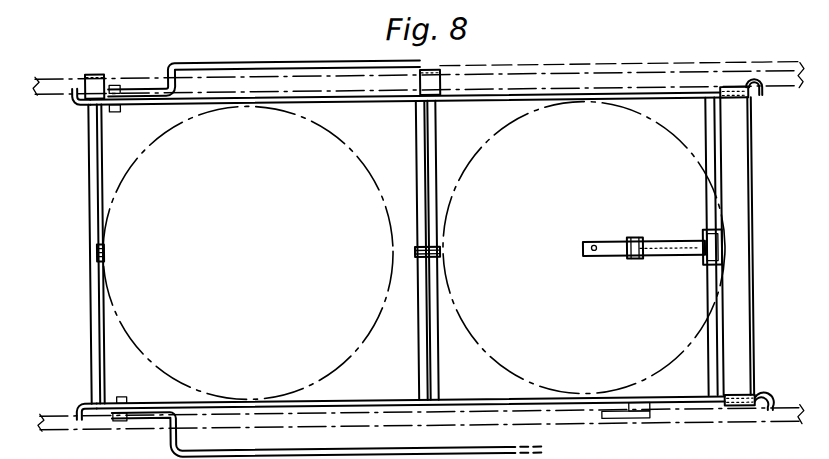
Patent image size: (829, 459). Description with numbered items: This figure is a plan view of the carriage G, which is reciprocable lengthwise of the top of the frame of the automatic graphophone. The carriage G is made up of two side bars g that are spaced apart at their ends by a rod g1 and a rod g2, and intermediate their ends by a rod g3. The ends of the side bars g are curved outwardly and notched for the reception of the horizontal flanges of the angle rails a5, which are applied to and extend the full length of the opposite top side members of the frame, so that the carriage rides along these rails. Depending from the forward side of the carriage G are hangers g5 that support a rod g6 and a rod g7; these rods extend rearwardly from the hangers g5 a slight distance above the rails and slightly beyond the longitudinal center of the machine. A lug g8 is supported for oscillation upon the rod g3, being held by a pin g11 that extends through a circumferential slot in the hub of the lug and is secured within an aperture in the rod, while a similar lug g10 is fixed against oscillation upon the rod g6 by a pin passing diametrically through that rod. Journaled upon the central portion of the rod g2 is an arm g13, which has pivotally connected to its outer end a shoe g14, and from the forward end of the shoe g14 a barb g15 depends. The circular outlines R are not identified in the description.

The carriage G is at (310, 96).
The side bars g is at (568, 99).
The rod g1 is at (92, 333).
The rod g2 is at (722, 337).
The rod g3 is at (420, 349).
The hangers g5 is at (107, 74).
The rod g6 is at (105, 135).
The rod g7 is at (437, 191).
The lug g8 is at (433, 258).
The lug g10 is at (104, 257).
The pins g11 is at (440, 251).
The arm g13 is at (681, 260).
The shoe g14 is at (616, 247).
The barb g15 is at (596, 261).
The wheel R is at (371, 160).
The angle rails a5 is at (791, 84).